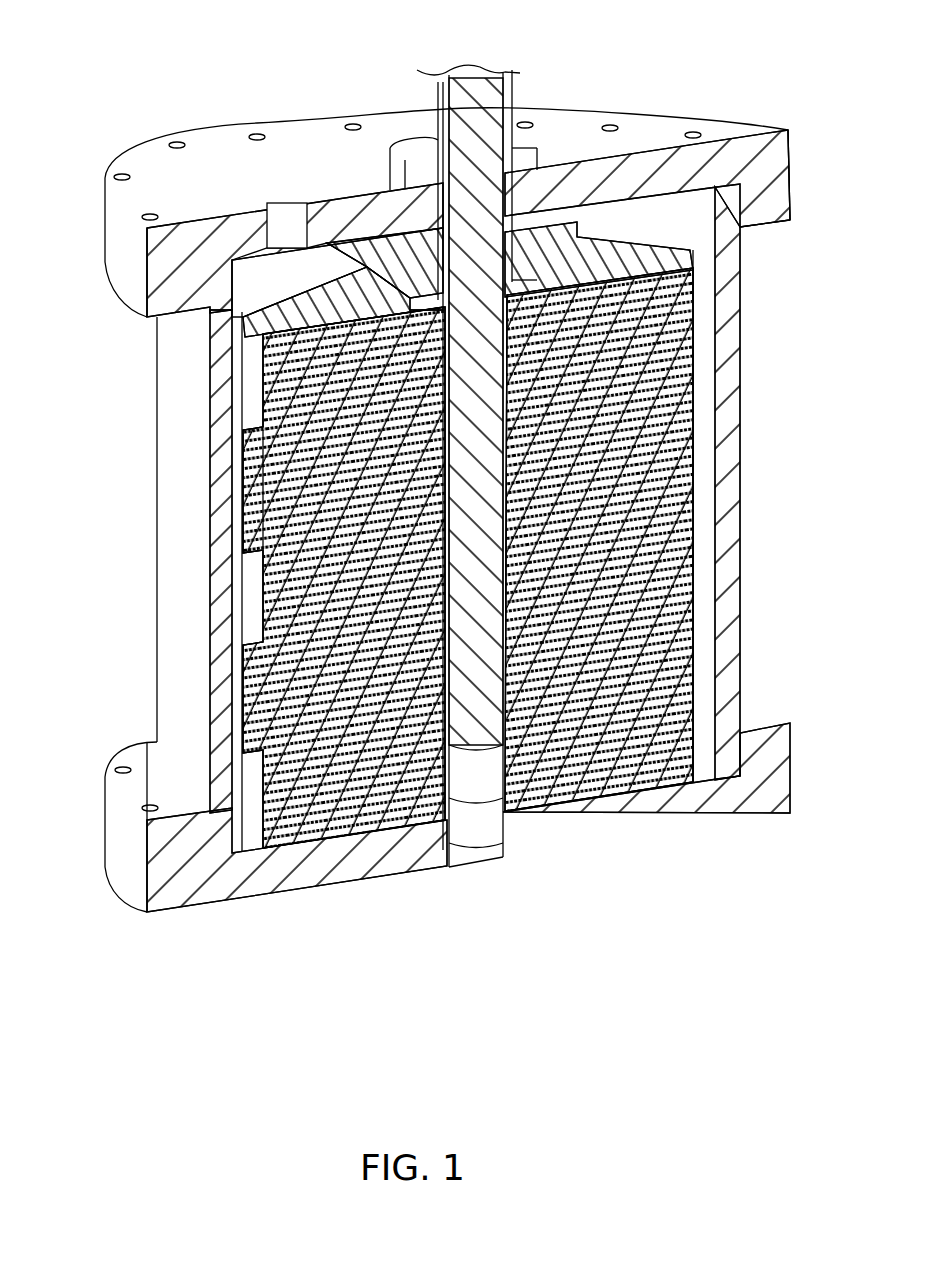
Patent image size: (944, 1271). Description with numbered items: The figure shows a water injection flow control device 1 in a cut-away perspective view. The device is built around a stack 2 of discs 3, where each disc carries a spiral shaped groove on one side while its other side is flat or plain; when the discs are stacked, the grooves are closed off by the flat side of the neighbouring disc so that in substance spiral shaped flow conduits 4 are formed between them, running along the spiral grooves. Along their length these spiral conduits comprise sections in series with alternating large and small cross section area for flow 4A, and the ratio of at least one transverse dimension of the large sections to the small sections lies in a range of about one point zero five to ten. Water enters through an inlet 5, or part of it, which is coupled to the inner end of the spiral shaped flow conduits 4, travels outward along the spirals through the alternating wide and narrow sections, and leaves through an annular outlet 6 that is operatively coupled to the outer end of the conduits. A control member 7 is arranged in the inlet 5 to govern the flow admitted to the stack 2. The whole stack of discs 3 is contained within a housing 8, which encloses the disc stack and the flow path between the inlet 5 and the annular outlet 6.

The water injection flow control device 1 is at (451, 474).
The stack 2 is at (253, 587).
The discs 3 is at (253, 638).
The spiral shaped flow conduits 4 is at (599, 539).
The sections with alternating large and small cross section area for flow 4A is at (305, 758).
The inlet 5 is at (463, 830).
The annular outlet 6 is at (283, 218).
The control member 7 is at (438, 106).
The housing 8 is at (733, 325).